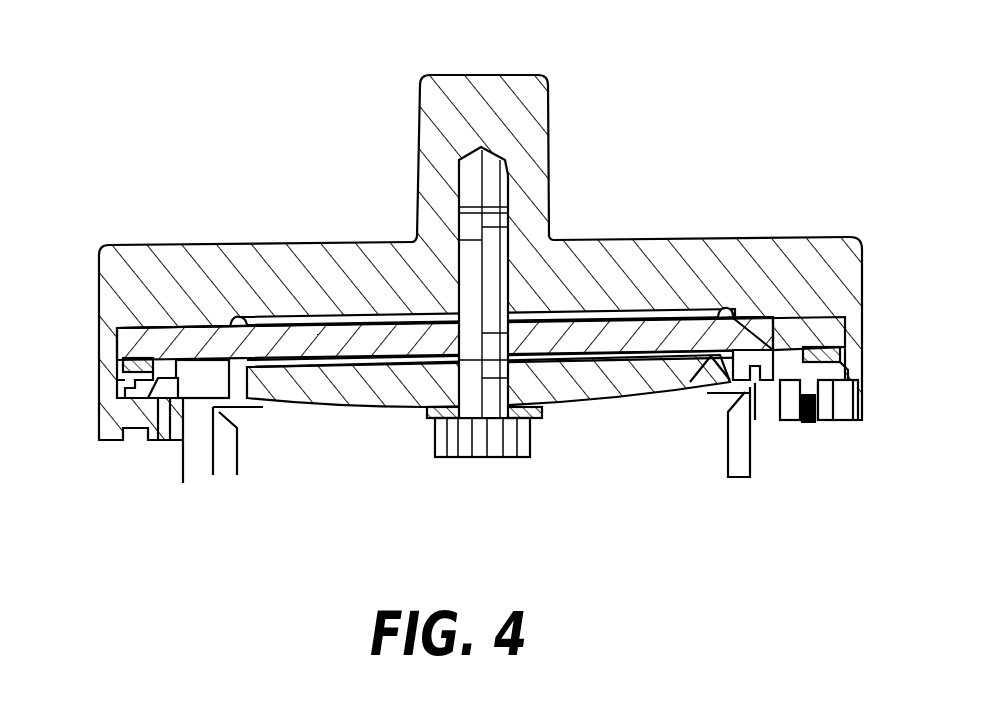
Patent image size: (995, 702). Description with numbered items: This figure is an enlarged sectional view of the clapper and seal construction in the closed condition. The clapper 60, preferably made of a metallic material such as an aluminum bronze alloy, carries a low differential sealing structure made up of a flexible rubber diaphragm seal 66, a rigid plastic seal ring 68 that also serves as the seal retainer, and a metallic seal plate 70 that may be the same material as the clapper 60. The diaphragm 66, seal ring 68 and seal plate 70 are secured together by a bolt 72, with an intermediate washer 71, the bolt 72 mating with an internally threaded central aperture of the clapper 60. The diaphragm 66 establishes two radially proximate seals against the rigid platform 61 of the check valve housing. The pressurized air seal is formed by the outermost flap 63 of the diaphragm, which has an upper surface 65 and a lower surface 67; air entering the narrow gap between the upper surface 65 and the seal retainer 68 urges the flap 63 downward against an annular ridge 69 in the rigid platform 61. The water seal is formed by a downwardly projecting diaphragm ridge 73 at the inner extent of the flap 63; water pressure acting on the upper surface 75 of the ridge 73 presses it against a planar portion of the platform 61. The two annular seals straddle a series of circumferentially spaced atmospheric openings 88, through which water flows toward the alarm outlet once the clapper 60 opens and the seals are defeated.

The clapper 60 is at (732, 237).
The upper surface of the downwardly projecting ridge 75 is at (770, 388).
The flexible diaphragm seal 66 is at (603, 337).
The seal plate 70 is at (392, 406).
The downwardly projecting diaphragm ridge 73 is at (785, 365).
The rigid platform 61 is at (120, 402).
The atmospheric openings 88 is at (167, 442).
The lower surface of the flap 67 is at (812, 385).
The annular ridge 69 is at (822, 387).
The outermost flap 63 is at (837, 393).
The upper surface of the flap 65 is at (863, 305).
The seal ring 68 is at (847, 362).
The bolt 72 is at (450, 445).
The washer 71 is at (542, 418).